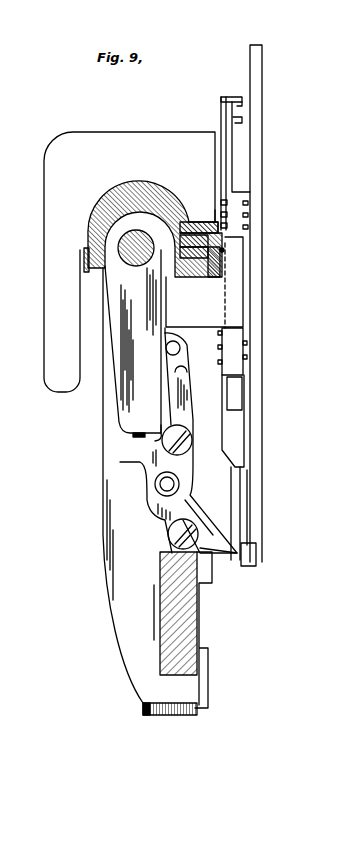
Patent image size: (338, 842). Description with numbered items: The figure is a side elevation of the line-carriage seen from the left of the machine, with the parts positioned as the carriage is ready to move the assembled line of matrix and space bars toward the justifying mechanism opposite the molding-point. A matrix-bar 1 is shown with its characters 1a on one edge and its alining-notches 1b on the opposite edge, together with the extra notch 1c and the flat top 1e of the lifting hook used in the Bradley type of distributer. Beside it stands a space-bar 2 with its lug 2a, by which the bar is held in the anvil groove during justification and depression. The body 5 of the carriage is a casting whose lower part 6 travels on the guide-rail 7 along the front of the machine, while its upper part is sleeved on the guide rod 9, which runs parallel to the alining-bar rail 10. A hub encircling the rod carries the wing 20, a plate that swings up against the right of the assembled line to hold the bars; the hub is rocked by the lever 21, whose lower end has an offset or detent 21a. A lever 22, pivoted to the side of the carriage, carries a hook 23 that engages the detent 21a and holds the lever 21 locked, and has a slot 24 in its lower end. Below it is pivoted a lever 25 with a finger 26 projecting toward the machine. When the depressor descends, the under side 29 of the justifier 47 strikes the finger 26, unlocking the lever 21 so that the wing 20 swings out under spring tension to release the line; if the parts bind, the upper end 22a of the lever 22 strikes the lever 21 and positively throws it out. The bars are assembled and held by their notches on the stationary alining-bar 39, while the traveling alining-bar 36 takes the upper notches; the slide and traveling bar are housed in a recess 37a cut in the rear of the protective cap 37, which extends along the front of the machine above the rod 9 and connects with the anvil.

The matrix-bar 1 is at (225, 232).
The characters 1a is at (225, 130).
The alining-notches 1b is at (234, 190).
The extra notch 1c is at (215, 210).
The flat end of the hook 1e is at (235, 135).
The space-bar 2 is at (233, 421).
The lug 2a is at (211, 230).
The body of the carriage 5 is at (115, 528).
The lower part of the carriage 6 is at (147, 670).
The guide-rail 7 is at (190, 613).
The guide rod 9 is at (110, 255).
The alining-bar rail 10 is at (227, 275).
The wing 20 is at (204, 282).
The lever 21 is at (133, 341).
The detent 21a is at (140, 435).
The lever 22 is at (185, 407).
The upper end of the lever 22a is at (181, 367).
The hook 23 is at (143, 448).
The slot 24 is at (172, 483).
The lever 25 is at (197, 514).
The finger 26 is at (218, 548).
The under side of the justifier 29 is at (245, 550).
The traveling alining-bar 36 is at (223, 226).
The cap 37 is at (113, 188).
The recess 37a is at (177, 200).
The stationary alining-bar 39 is at (223, 249).
The justifier 47 is at (240, 487).